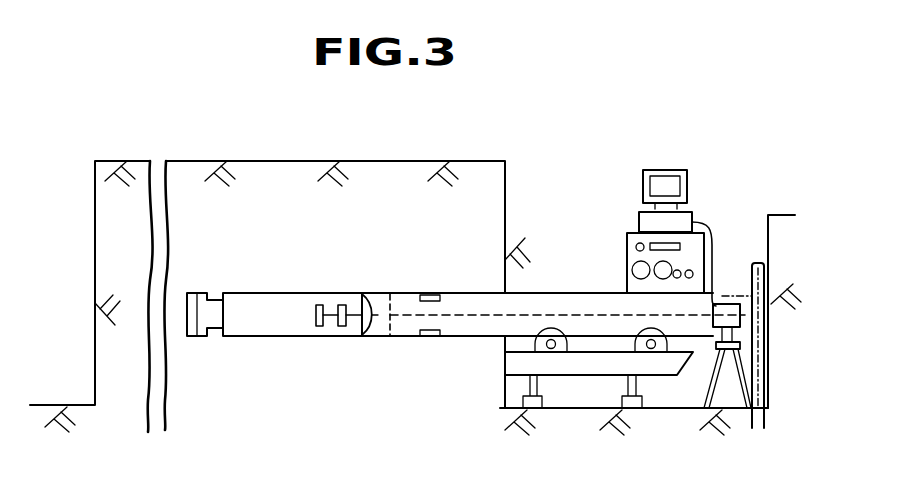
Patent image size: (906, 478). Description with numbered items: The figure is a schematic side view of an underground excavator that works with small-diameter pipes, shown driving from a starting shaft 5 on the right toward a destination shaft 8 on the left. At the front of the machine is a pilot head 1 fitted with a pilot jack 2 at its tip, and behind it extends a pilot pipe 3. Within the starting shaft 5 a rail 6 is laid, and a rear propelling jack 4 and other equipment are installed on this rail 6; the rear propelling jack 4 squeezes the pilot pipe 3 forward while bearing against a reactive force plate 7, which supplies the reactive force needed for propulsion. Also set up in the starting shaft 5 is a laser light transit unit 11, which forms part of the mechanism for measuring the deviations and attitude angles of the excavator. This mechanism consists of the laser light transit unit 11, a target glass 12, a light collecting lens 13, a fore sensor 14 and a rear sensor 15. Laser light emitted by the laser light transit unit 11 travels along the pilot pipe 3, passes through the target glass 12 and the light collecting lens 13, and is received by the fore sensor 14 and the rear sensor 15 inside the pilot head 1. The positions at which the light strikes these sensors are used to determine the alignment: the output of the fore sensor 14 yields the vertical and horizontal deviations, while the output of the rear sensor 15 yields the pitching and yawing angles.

The pilot head 1 is at (262, 286).
The pilot jack 2 is at (217, 330).
The pilot pipe 3 is at (465, 338).
The rear propelling jack 4 is at (743, 294).
The starting shaft 5 is at (541, 197).
The rail 6 is at (573, 375).
The reactive force plate 7 is at (766, 278).
The destination shaft 8 is at (78, 160).
The laser light transit unit 11 is at (741, 345).
The target glass 12 is at (392, 307).
The light collecting lens 13 is at (370, 292).
The fore sensor 14 is at (344, 302).
The rear sensor 15 is at (318, 302).